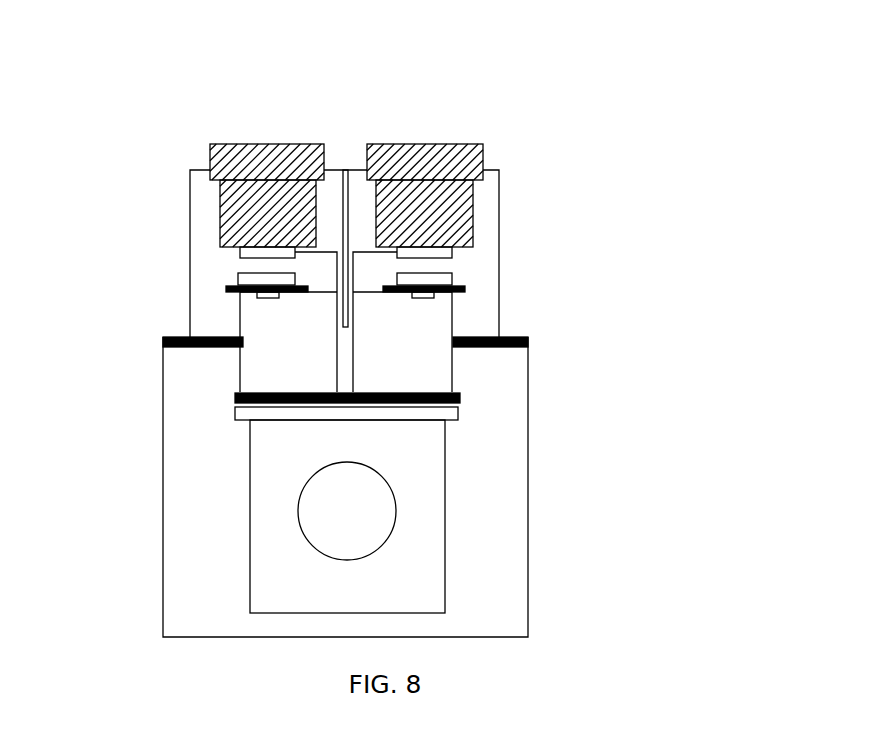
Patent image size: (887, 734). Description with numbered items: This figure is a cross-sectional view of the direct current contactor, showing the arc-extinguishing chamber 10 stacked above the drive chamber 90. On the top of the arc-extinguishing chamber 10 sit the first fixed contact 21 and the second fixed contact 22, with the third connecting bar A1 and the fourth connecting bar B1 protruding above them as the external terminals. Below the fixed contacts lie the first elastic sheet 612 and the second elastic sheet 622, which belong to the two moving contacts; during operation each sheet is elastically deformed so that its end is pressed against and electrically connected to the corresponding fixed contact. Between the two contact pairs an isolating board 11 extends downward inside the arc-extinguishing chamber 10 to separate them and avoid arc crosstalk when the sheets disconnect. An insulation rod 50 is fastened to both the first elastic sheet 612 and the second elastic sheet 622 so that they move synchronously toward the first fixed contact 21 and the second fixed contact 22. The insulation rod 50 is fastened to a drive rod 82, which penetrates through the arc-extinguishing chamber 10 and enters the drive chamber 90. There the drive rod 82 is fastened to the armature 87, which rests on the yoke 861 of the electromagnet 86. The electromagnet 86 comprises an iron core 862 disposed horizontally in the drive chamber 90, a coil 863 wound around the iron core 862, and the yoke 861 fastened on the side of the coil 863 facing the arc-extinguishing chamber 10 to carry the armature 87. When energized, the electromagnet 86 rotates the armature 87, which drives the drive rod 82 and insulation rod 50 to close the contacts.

The arc-extinguishing chamber 10 is at (490, 200).
The isolating board 11 is at (339, 172).
The first fixed contact 21 is at (233, 208).
The second fixed contact 22 is at (473, 222).
The third connecting bar A1 is at (267, 143).
The fourth connecting bar B1 is at (425, 143).
The first elastic sheet 612 is at (226, 290).
The second elastic sheet 622 is at (463, 289).
The insulation rod 50 is at (377, 292).
The drive rod 82 is at (330, 351).
The armature 87 is at (235, 401).
The electromagnet 86 is at (491, 510).
The yoke 861 is at (448, 419).
The iron core 862 is at (377, 497).
The coil 863 is at (398, 557).
The drive chamber 90 is at (212, 556).